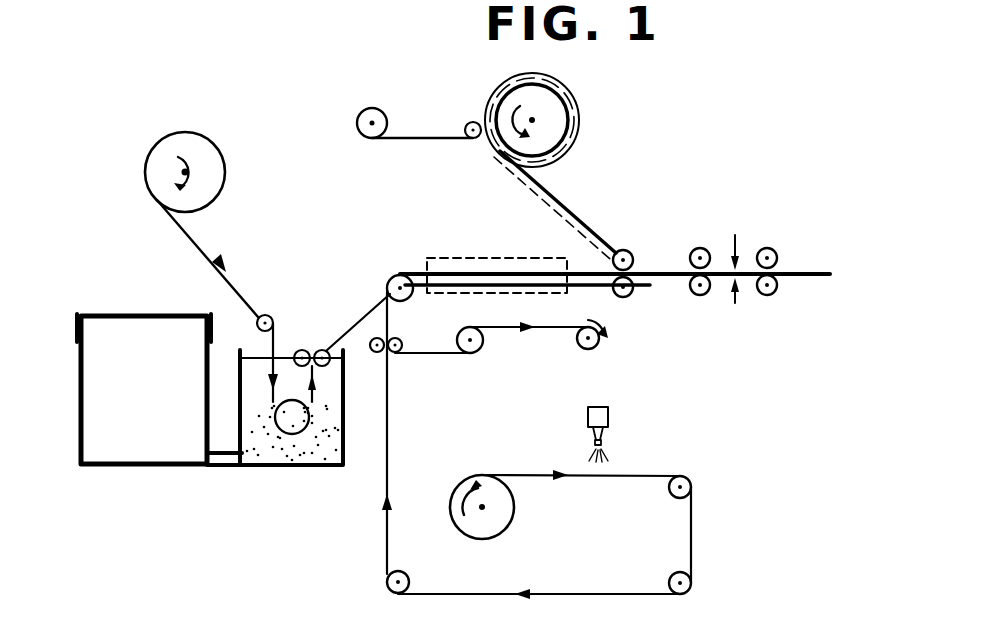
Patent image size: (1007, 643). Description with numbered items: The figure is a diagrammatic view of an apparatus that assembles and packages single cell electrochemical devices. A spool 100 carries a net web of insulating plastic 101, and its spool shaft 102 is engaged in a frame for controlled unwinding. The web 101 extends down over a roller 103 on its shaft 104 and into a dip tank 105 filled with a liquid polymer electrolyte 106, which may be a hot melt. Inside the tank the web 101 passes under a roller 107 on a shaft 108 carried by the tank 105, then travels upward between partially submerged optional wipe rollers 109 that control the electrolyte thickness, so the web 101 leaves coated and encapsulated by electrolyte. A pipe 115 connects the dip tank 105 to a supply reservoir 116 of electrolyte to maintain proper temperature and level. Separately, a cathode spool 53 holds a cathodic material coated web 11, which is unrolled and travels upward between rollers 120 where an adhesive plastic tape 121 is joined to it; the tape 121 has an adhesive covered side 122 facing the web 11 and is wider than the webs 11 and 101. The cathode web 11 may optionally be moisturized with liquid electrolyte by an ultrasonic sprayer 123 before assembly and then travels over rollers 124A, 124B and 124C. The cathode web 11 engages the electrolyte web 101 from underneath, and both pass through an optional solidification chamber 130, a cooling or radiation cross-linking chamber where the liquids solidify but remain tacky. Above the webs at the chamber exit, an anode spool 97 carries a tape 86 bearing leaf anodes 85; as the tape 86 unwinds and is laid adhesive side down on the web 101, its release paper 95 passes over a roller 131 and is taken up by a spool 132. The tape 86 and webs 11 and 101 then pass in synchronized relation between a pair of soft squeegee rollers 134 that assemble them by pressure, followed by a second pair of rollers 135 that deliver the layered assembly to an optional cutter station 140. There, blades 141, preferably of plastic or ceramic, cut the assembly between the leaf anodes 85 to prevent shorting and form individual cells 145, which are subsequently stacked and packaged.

The cathodic material coated web 11 is at (387, 433).
The cathode spool 53 is at (497, 505).
The leaf anodes 85 is at (555, 213).
The tape 86 is at (558, 205).
The release paper 95 is at (418, 138).
The anode spool 97 is at (553, 108).
The spool 100 is at (205, 158).
The net web of insulating plastic 101 is at (197, 238).
The spool shaft 102 is at (185, 172).
The roller 103 is at (262, 312).
The shaft 104 is at (274, 320).
The dip tank 105 is at (310, 502).
The polymer electrolyte 106 is at (333, 463).
The roller 107 is at (245, 457).
The shaft 108 is at (290, 420).
The wipe rollers 109 is at (330, 363).
The pipe 115 is at (217, 464).
The supply reservoir 116 is at (62, 394).
The rollers 120 is at (383, 338).
The adhesive plastic tape 121 is at (450, 355).
The adhesive covered side 122 is at (438, 352).
The ultrasonic sprayer 123 is at (608, 412).
The roller 124A is at (691, 487).
The roller 124B is at (691, 583).
The roller 124C is at (405, 592).
The solidification chamber 130 is at (480, 254).
The roller 131 is at (471, 140).
The spool 132 is at (372, 108).
The soft squeegee rollers 134 is at (632, 252).
The second pair of rollers 135 is at (690, 257).
The cutter station 140 is at (733, 243).
The blades 141 is at (735, 300).
The individual cells 145 is at (830, 274).